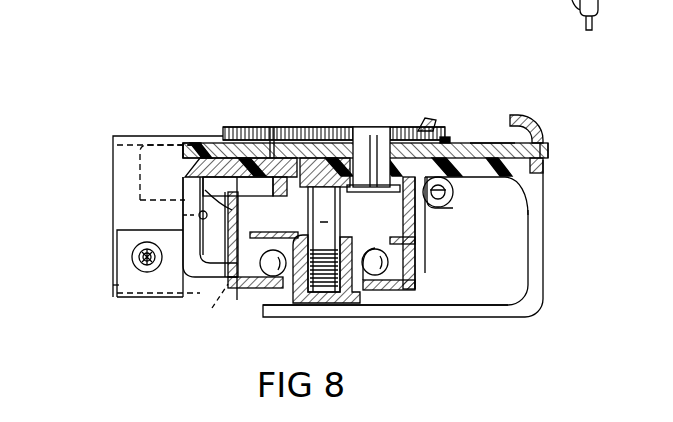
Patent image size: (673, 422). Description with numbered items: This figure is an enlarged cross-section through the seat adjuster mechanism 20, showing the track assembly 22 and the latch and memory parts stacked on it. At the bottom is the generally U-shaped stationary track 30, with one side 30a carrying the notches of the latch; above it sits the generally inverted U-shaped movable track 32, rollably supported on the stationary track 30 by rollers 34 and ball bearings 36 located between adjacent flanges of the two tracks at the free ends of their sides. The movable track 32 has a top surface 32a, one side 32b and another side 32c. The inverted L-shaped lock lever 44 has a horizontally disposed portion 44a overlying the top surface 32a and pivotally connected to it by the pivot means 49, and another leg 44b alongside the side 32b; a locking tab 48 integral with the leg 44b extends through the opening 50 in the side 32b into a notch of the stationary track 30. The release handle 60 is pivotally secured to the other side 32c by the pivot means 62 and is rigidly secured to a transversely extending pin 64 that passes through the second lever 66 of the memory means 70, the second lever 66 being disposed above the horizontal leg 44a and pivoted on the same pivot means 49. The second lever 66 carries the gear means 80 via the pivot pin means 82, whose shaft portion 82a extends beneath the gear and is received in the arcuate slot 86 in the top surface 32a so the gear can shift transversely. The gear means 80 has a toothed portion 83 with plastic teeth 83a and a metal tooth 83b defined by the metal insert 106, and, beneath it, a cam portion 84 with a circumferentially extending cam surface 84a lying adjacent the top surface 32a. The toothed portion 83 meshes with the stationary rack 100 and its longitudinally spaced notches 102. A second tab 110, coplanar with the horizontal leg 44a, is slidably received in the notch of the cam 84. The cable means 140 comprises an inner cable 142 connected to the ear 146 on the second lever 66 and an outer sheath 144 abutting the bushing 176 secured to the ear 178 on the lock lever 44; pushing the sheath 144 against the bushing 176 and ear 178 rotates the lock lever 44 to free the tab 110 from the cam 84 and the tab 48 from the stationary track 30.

The seat adjuster mechanism 20 is at (417, 324).
The track assembly 22 is at (419, 296).
The stationary track 30 is at (348, 304).
The side of the stationary track 30a is at (296, 296).
The movable track 32 is at (232, 158).
The top surface of the movable track 32a is at (422, 119).
The side of the movable track 32b is at (186, 176).
The other side of the movable track 32c is at (427, 253).
The rollers 34 is at (322, 143).
The ball bearings 36 is at (270, 249).
The lock lever 44 is at (181, 150).
The horizontally disposed portion of the lock lever 44a is at (300, 143).
The other leg of the lock lever 44b is at (200, 231).
The locking tab 48 is at (235, 290).
The pivot means 49 is at (238, 185).
The opening in the side of the movable track 50 is at (211, 310).
The release handle 60 is at (455, 200).
The pivot means 62 is at (545, 235).
The transversely extending pin 64 is at (446, 136).
The second lever 66 is at (181, 120).
The memory means 70 is at (386, 114).
The gear means 80 is at (252, 120).
The pivot pin means 82 is at (367, 127).
The shaft portion of the pivot pin means 82a is at (400, 222).
The toothed portion of the gear means 83 is at (290, 143).
The teeth 83a is at (192, 143).
The metal tooth 83b is at (550, 152).
The cam portion of the gear means 84 is at (500, 178).
The cam surface 84a is at (545, 170).
The arcuate slot 86 is at (350, 128).
The stationary rack 100 is at (559, 106).
The notches of the rack 102 is at (548, 138).
The metal insert 106 is at (493, 143).
The second transversely extending tab 110 is at (272, 127).
The cable means 140 is at (142, 297).
The inner cable 142 is at (139, 257).
The outer sheath 144 is at (140, 272).
The ear on the second lever 146 is at (118, 184).
The bushing 176 is at (158, 270).
The ear on the lock lever 178 is at (118, 283).